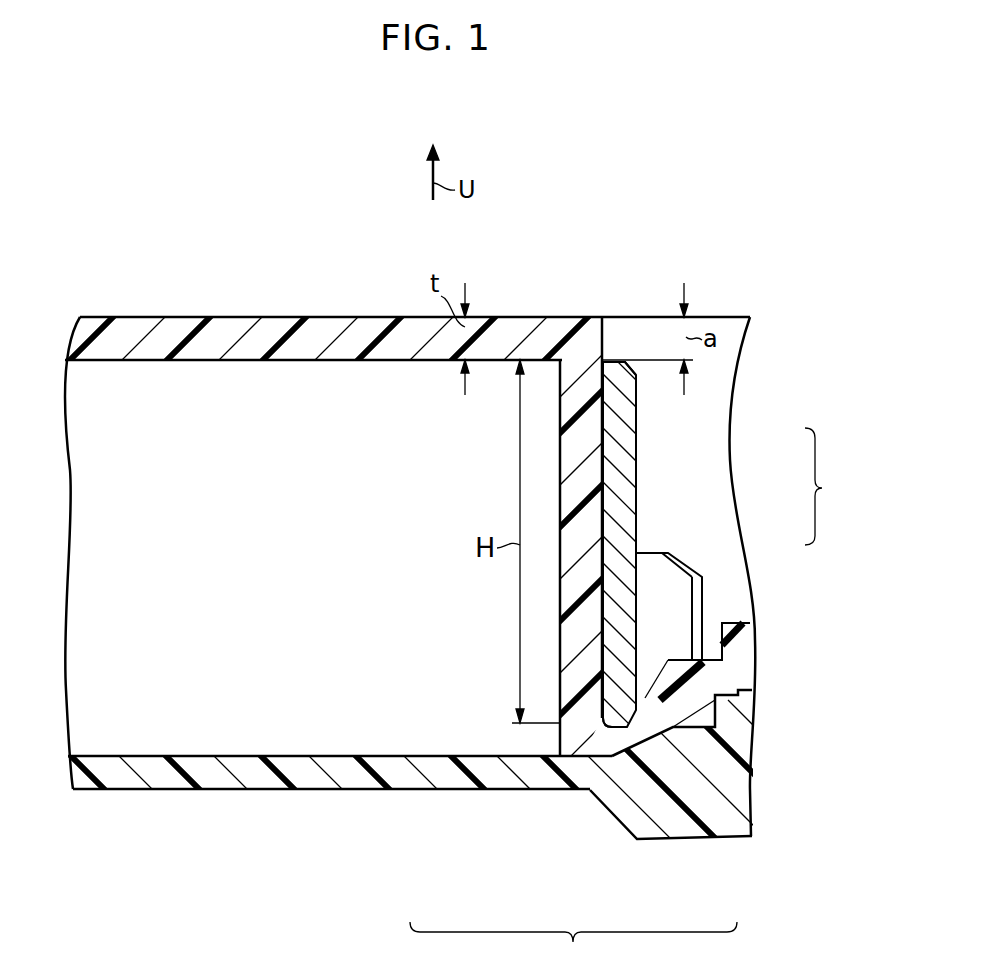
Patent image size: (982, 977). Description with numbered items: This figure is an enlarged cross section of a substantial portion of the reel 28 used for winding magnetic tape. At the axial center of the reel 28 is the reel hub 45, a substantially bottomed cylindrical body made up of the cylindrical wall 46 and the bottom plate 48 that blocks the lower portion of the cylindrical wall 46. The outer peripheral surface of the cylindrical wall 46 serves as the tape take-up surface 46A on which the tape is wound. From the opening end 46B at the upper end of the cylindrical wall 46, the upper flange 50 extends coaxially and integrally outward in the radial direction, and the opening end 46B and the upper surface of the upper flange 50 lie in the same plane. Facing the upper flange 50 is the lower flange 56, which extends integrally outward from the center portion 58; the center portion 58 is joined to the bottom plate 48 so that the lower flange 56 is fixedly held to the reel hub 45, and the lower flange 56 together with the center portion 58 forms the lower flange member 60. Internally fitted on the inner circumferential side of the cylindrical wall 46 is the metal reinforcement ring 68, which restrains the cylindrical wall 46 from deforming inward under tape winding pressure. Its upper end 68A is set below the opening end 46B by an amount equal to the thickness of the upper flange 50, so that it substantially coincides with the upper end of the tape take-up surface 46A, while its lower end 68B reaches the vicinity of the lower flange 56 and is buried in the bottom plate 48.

The reel 28 is at (573, 186).
The upper flange 50 is at (363, 330).
The cylindrical wall 46 is at (590, 472).
The tape take-up surface 46A is at (548, 548).
The opening end 46B is at (728, 317).
The reel hub 45 is at (834, 486).
The bottom plate 48 is at (716, 696).
The reinforcement ring 68 is at (638, 432).
The upper end of the reinforcement ring 68A is at (615, 360).
The lower end of the reinforcement ring 68B is at (610, 722).
The lower flange 56 is at (405, 790).
The center portion 58 is at (725, 813).
The lower flange member 60 is at (573, 948).